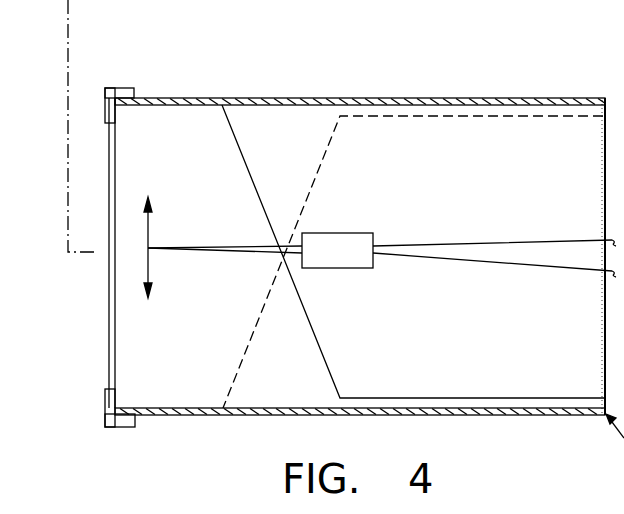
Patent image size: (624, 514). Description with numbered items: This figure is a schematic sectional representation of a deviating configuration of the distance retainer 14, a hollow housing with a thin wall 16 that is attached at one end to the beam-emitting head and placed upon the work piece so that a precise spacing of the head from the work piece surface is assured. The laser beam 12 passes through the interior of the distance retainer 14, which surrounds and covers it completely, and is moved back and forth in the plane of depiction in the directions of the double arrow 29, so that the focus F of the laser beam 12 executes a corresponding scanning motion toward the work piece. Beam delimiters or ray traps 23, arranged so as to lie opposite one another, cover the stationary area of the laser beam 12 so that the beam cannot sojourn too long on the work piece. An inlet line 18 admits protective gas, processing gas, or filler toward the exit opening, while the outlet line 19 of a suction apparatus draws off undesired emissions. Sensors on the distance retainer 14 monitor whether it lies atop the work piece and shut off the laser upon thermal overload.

The laser beam 12 is at (552, 250).
The distance retainer 14 is at (428, 424).
The wall 16 is at (290, 99).
The inlet line 18 is at (413, 116).
The outlet line 19 is at (512, 398).
The beam delimiter 23 is at (118, 88).
The double arrow 29 is at (150, 232).
The focus F is at (150, 250).